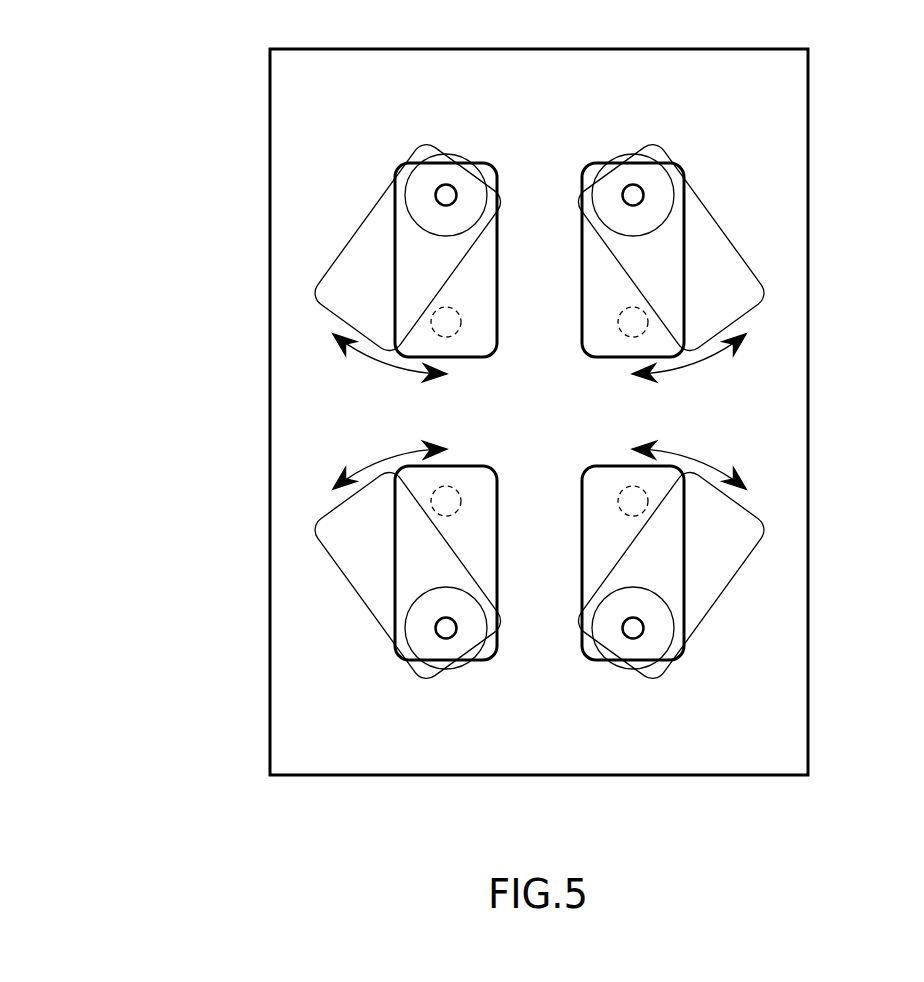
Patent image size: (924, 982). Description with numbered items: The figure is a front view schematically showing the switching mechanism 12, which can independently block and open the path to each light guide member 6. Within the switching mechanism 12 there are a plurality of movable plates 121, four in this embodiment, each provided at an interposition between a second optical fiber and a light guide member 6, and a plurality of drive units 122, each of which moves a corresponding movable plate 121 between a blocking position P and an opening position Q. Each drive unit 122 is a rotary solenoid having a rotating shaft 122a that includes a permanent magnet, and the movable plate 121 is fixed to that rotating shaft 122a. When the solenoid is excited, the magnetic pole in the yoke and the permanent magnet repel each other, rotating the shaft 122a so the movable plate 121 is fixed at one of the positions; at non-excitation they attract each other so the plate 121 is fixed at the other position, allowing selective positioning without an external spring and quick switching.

The switching mechanism 12 is at (284, 96).
The movable plate 121 is at (328, 258).
The drive unit 122 is at (462, 158).
The rotating shaft 122a is at (434, 194).
The light guide member 6 is at (452, 305).